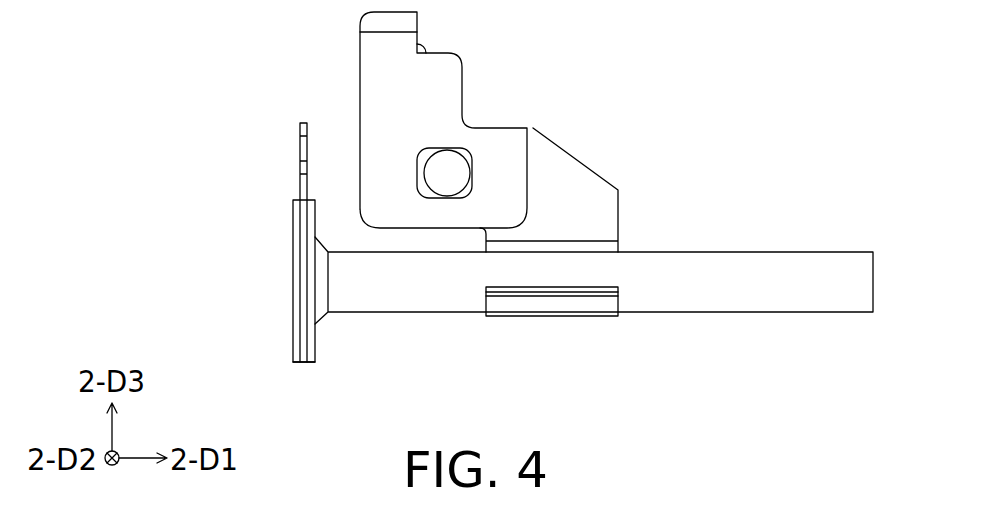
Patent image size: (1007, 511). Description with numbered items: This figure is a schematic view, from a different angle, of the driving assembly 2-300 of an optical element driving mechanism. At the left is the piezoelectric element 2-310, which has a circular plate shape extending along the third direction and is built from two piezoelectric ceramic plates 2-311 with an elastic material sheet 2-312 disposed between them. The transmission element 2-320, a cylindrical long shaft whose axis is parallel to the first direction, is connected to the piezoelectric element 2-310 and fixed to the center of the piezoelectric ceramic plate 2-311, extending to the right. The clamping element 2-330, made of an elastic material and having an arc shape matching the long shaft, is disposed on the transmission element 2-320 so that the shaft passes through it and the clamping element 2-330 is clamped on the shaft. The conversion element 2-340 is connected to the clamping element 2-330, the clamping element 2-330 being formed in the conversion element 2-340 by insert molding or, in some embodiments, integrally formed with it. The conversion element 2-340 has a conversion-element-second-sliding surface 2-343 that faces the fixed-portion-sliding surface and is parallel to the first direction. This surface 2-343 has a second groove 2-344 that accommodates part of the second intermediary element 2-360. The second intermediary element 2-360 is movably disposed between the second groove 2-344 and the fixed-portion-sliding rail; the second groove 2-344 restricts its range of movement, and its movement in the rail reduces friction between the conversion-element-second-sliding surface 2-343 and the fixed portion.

The driving assembly 2-300 is at (843, 35).
The conversion element 2-340 is at (360, 62).
The conversion-element-second-sliding surface 2-343 is at (375, 95).
The second groove 2-344 is at (417, 176).
The second intermediary element 2-360 is at (448, 163).
The transmission element 2-320 is at (742, 262).
The clamping element 2-330 is at (552, 310).
The piezoelectric element 2-310 is at (293, 247).
The elastic material sheet 2-312 is at (303, 300).
The piezoelectric ceramic plates 2-311 is at (315, 363).